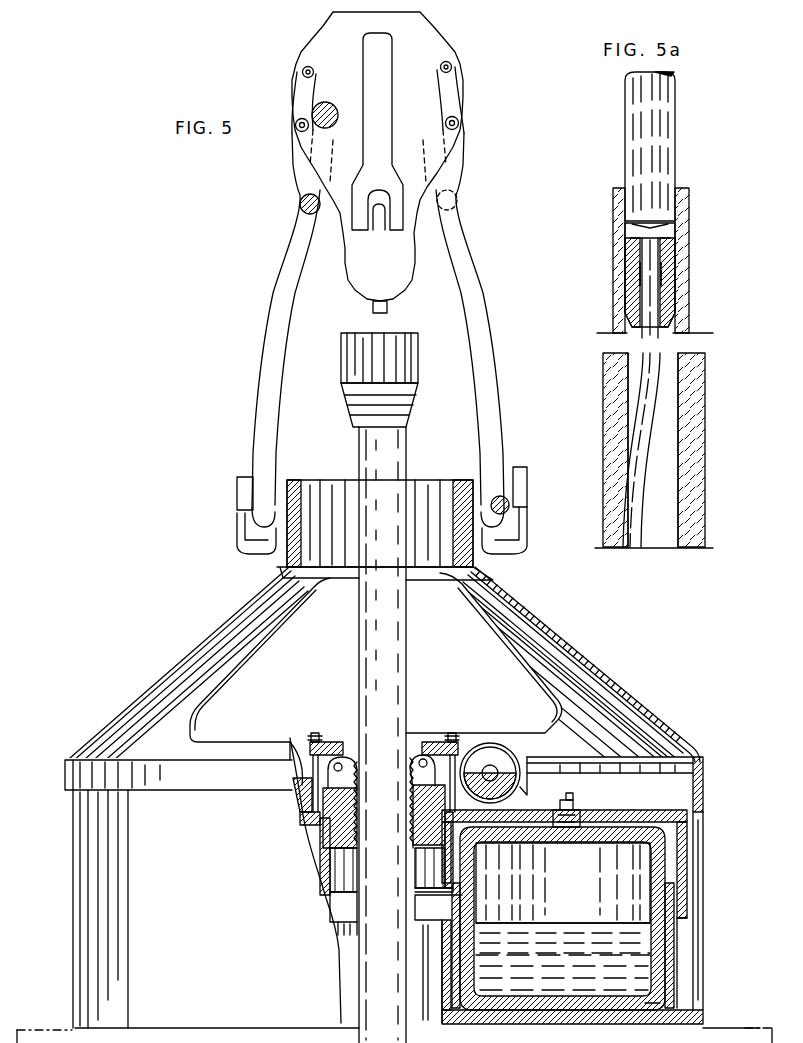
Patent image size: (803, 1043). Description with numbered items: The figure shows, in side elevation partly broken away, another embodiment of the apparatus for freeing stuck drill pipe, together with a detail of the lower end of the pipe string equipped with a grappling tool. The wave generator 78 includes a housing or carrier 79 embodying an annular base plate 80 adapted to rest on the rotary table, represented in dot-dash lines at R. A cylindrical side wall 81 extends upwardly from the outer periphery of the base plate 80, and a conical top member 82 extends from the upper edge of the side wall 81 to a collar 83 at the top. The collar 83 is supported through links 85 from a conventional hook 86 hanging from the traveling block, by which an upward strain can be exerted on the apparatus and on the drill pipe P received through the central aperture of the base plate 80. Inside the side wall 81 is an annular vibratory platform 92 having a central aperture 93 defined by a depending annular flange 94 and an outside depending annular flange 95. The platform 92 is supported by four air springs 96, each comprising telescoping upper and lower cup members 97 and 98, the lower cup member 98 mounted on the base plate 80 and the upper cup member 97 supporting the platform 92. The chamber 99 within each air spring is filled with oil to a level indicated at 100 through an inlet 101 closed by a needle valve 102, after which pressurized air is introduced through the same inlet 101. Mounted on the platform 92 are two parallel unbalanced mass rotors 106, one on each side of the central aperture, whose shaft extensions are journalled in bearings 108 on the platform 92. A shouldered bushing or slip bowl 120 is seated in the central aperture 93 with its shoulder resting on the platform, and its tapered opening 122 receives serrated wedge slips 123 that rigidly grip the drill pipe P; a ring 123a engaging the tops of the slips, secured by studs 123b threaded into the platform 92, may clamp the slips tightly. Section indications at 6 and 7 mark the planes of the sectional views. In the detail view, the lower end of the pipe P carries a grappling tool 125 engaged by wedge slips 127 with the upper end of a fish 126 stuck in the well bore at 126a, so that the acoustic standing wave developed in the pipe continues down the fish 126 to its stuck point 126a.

In FIG. 5, the hook 86 is at (430, 33).
In FIG. 5, the links 85 is at (268, 330).
In FIG. 5, the drill pipe P is at (407, 655).
In FIG. 5A, the drill pipe P is at (677, 118).
In FIG. 5, the collar 83 is at (470, 482).
In FIG. 5, the wave generator 78 is at (150, 692).
In FIG. 5, the conical top member 82 is at (595, 672).
In FIG. 5, the housing or carrier 79 is at (72, 892).
In FIG. 5, the cylindrical side wall 81 is at (700, 860).
In FIG. 5, the section line 6- 6 is at (37, 745).
In FIG. 5, the section line 7- 7 is at (432, 897).
In FIG. 5, the ring 123a is at (430, 740).
In FIG. 5, the studs 123b is at (456, 736).
In FIG. 5, the serrated wedge slips 123 is at (318, 833).
In FIG. 5, the shouldered bushing or slip bowl 120 is at (330, 843).
In FIG. 5, the tapered opening 122 is at (330, 862).
In FIG. 5, the depending annular flange 94 is at (325, 880).
In FIG. 5, the central aperture 93 is at (340, 900).
In FIG. 5, the unbalanced mass rotors 106 is at (522, 770).
In FIG. 5, the bearings 108 is at (524, 792).
In FIG. 5, the annular vibratory platform 92 is at (634, 806).
In FIG. 5, the annular base plate 80 is at (560, 1018).
In FIG. 5, the upper cup member 97 is at (680, 832).
In FIG. 5, the outside depending annular flange 95 is at (690, 890).
In FIG. 5, the air springs 96 is at (685, 950).
In FIG. 5, the lower cup member 98 is at (680, 990).
In FIG. 5, the chamber 99 is at (580, 889).
In FIG. 5, the oil level 100 is at (555, 922).
In FIG. 5, the inlet 101 is at (553, 828).
In FIG. 5, the needle valve 102 is at (580, 800).
In FIG. 5, the rotary table R is at (757, 1018).
In FIG. 5A, the grappling tool 125 is at (676, 188).
In FIG. 5A, the wedge slips 127 is at (665, 272).
In FIG. 5A, the fish 126 is at (659, 325).
In FIG. 5A, the stuck point of the fish 126a is at (624, 510).